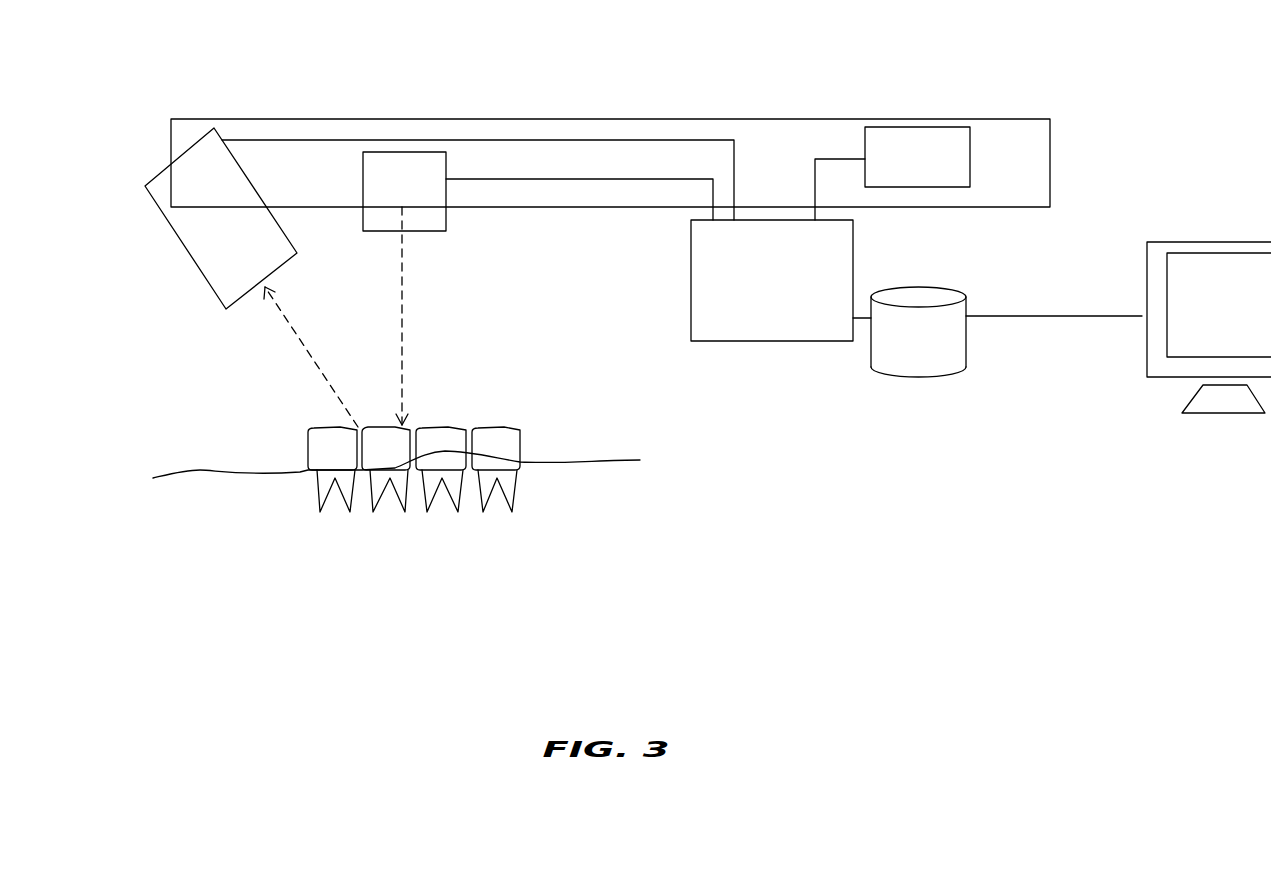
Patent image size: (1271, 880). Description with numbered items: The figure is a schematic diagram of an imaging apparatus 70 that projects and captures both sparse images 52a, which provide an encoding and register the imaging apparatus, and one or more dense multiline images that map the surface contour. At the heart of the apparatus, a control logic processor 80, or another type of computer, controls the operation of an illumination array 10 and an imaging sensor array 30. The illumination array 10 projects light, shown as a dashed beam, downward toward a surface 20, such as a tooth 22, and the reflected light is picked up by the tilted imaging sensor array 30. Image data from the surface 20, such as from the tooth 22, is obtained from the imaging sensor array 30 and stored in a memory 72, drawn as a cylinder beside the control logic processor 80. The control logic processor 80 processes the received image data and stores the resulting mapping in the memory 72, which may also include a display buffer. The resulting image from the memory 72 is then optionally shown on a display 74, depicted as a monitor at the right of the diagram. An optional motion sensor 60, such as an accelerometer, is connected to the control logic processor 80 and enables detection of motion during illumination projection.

The illumination array 10 is at (435, 163).
The surface 20 is at (396, 473).
The tooth 22 is at (393, 477).
The imaging sensor array 30 is at (195, 262).
The sparse image 52a is at (405, 383).
The motion sensor 60 is at (892, 173).
The imaging apparatus 70 is at (816, 506).
The memory 72 is at (1006, 332).
The display 74 is at (1209, 327).
The control logic processor 80 is at (781, 280).